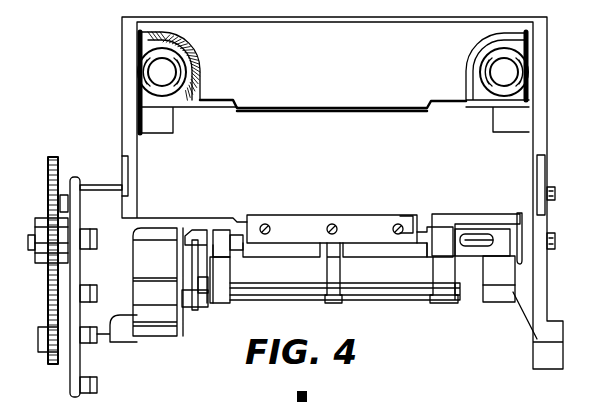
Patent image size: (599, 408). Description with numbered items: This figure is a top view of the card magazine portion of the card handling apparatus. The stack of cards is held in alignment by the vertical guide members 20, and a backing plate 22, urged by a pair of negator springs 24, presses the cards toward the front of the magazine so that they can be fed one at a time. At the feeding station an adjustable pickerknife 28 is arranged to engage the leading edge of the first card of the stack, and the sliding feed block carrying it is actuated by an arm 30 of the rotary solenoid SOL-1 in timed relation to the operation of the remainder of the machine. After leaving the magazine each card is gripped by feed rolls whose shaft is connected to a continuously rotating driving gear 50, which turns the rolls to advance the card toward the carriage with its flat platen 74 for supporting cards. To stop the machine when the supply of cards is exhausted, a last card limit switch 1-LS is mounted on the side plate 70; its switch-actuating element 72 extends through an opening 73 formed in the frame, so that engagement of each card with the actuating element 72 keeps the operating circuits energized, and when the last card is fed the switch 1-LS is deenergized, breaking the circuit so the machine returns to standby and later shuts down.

The vertical guide members 20 is at (122, 134).
The backing plate 22 is at (358, 107).
The negator springs 24 is at (140, 73).
The pickerknife 28 is at (318, 214).
The arm 30 is at (322, 296).
The driving gear 50 is at (49, 286).
The side plate 70 is at (556, 238).
The switch-actuating element 72 is at (518, 213).
The opening 73 is at (513, 223).
The platen 74 is at (556, 197).
The rotary solenoid SOL-1 is at (150, 342).
The last card limit switch 1-LS is at (494, 301).